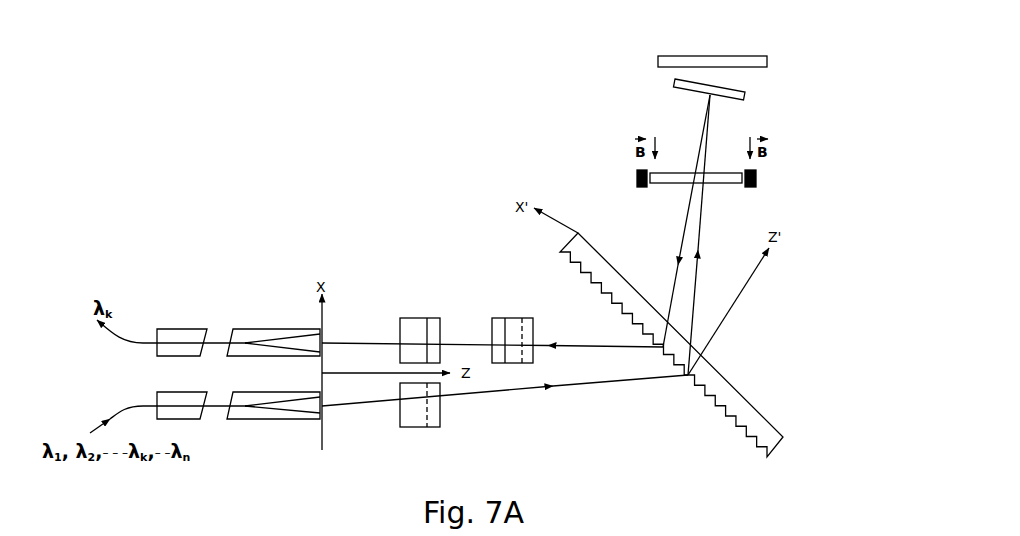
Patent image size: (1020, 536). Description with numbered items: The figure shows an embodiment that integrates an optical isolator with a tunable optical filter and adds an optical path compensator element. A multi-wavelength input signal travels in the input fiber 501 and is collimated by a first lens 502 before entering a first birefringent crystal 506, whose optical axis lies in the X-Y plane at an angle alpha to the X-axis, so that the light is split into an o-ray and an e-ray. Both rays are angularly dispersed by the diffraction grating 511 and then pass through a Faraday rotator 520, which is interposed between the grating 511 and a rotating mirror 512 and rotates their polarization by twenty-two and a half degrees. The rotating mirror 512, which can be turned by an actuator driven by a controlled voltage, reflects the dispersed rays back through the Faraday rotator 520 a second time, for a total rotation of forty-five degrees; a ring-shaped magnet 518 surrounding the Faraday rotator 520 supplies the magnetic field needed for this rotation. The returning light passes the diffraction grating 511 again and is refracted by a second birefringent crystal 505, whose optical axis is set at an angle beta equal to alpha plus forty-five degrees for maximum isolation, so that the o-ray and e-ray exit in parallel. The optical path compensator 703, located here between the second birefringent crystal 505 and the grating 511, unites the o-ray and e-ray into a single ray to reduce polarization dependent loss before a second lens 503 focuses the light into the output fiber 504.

The input fiber 501 is at (100, 419).
The first lens 502 is at (273, 417).
The second lens 503 is at (273, 333).
The output fiber 504 is at (99, 317).
The second birefringent crystal 505 is at (420, 329).
The first birefringent crystal 506 is at (420, 417).
The optical path compensator 703 is at (512, 329).
The diffraction grating 511 is at (774, 417).
The rotating mirror 512 is at (751, 93).
The ring-shaped magnet 518 is at (633, 177).
The Faraday rotator 520 is at (721, 167).